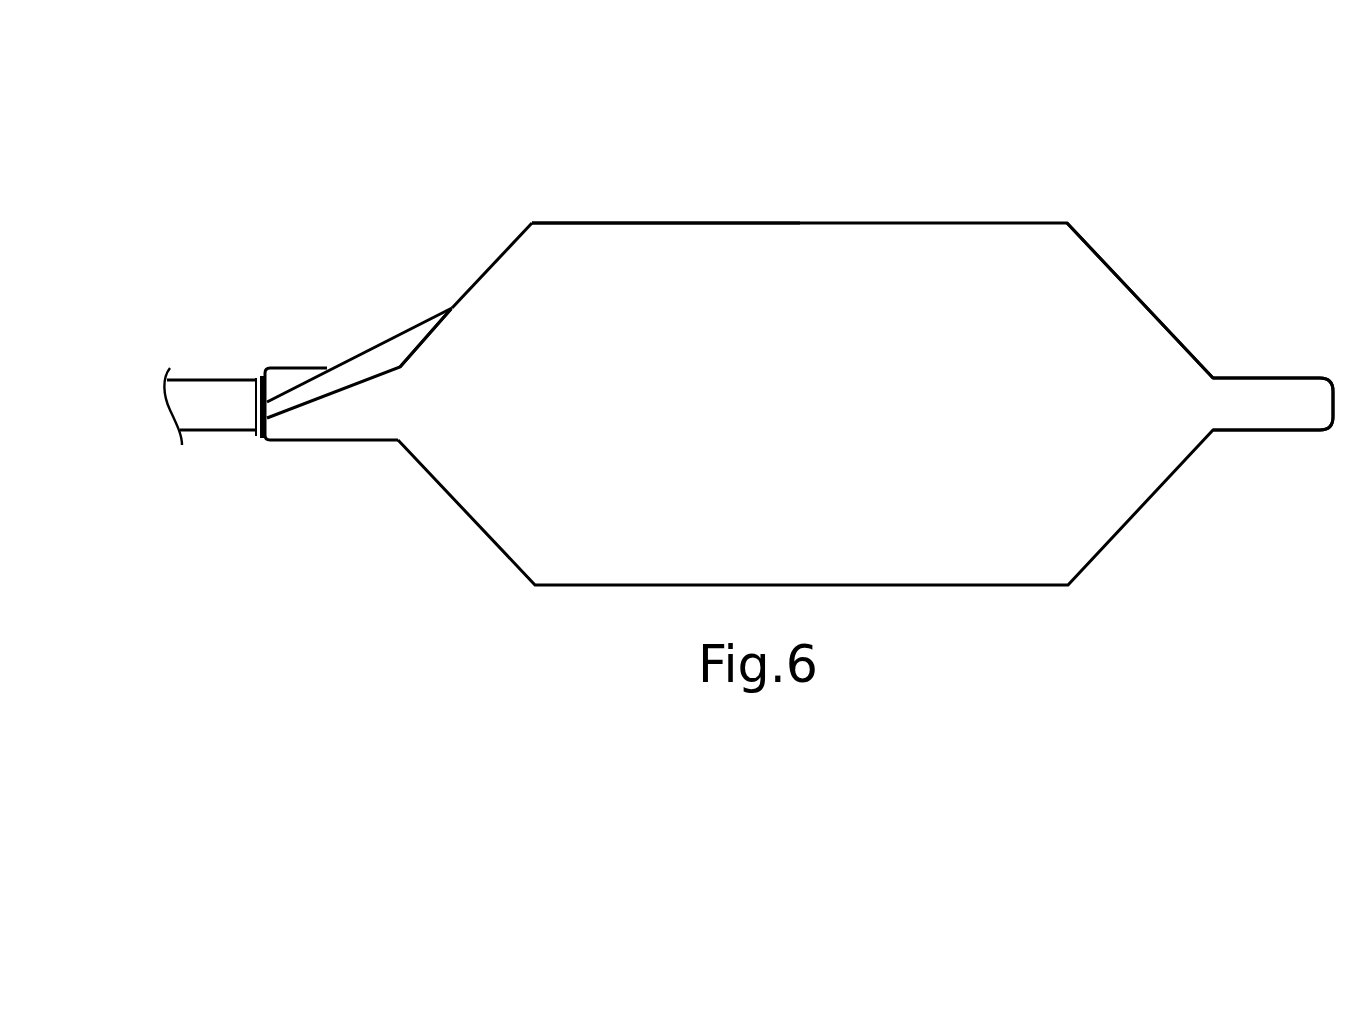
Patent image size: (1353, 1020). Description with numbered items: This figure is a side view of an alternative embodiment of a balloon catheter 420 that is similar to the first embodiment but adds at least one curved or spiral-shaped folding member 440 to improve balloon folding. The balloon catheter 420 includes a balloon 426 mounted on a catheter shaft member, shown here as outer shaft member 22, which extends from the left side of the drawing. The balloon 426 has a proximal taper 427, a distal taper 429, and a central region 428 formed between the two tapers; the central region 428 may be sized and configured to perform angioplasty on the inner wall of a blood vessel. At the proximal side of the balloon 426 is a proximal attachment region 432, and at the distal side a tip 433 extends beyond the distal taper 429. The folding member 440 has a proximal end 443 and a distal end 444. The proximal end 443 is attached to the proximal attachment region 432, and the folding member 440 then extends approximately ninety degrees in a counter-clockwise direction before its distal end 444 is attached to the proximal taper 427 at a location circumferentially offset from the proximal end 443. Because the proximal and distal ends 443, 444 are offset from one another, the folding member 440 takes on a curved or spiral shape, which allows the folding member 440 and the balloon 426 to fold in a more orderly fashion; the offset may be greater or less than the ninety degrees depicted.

The outer shaft member 22 is at (218, 422).
The balloon catheter 420 is at (265, 208).
The balloon 426 is at (902, 278).
The proximal taper 427 is at (485, 272).
The central region 428 is at (620, 223).
The distal taper 429 is at (1152, 310).
The proximal attachment region 432 is at (338, 405).
The distal tip 433 is at (1270, 390).
The folding member 440 is at (377, 318).
The proximal end 443 is at (288, 396).
The distal end 444 is at (435, 318).